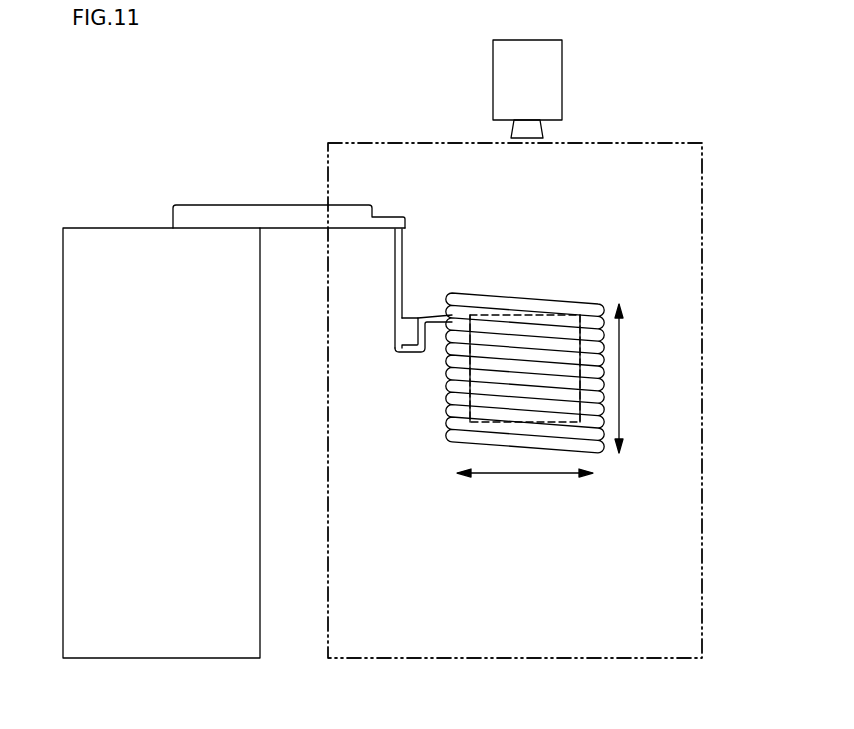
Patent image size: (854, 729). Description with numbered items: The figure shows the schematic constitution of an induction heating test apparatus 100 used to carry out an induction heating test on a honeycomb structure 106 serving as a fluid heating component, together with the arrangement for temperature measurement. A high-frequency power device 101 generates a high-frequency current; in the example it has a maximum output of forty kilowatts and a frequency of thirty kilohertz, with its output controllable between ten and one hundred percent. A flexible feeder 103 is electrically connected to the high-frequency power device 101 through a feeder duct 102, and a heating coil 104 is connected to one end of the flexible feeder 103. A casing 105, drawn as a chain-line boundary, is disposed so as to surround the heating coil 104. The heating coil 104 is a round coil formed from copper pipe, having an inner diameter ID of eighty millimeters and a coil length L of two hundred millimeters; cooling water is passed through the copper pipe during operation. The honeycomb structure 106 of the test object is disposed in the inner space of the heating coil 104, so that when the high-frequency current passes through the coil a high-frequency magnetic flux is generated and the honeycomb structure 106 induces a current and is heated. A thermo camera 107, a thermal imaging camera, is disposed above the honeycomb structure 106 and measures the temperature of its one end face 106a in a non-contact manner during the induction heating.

The induction heating test apparatus 100 is at (185, 128).
The high-frequency power device 101 is at (138, 643).
The feeder duct 102 is at (286, 213).
The flexible feeder 103 is at (399, 258).
The heating coil 104 is at (450, 442).
The casing 105 is at (705, 397).
The honeycomb structure 106 is at (600, 342).
The one end face 106a is at (530, 291).
The thermo camera 107 is at (542, 82).
The coil length L is at (621, 380).
The inner diameter ID is at (527, 475).